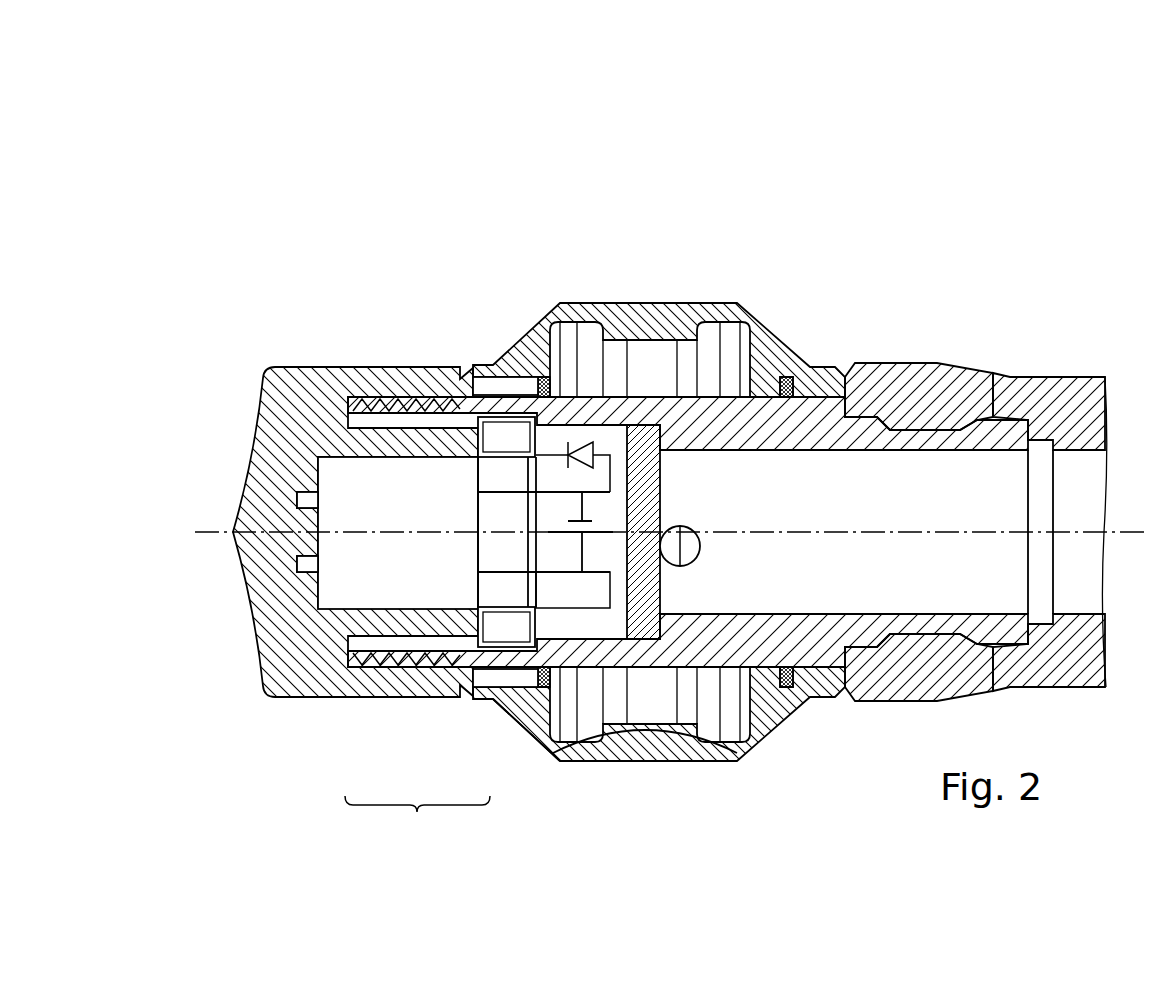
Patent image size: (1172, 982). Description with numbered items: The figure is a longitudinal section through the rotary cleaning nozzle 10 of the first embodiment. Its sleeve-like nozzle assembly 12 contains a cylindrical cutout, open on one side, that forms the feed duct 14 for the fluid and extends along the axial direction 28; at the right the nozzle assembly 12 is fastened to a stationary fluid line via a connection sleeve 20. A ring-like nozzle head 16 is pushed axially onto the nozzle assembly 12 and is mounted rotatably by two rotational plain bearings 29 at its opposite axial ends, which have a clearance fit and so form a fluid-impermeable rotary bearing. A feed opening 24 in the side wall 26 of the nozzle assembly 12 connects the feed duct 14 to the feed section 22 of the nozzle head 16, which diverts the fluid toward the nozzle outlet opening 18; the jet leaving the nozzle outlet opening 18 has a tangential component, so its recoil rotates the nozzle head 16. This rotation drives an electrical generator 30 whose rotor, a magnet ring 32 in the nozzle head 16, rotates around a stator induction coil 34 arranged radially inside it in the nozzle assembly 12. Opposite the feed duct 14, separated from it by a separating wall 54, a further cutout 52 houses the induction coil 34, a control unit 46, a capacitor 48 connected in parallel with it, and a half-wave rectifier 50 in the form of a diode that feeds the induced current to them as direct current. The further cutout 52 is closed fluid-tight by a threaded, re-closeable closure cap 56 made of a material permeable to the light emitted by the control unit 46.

The rotary cleaning nozzle 10 is at (985, 174).
The nozzle assembly 12 is at (868, 403).
The feed duct 14 is at (927, 470).
The nozzle head 16 is at (544, 762).
The nozzle outlet opening 18 is at (612, 757).
The connection sleeve 20 is at (1077, 400).
The feed section 22 is at (733, 730).
The feed opening 24 is at (692, 526).
The side wall 26 is at (722, 635).
The axial direction 28 is at (1141, 530).
The rotational plain bearing 29 is at (788, 376).
The electrical generator 30 is at (417, 820).
The magnet ring 32 is at (493, 678).
The induction coil 34 is at (497, 620).
The control unit 46 is at (337, 588).
The capacitor 48 is at (612, 516).
The half-wave rectifier 50 is at (598, 446).
The further cutout 52 is at (648, 735).
The separating wall 54 is at (661, 588).
The closure cap 56 is at (245, 442).